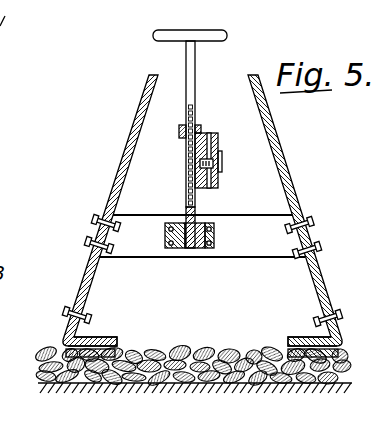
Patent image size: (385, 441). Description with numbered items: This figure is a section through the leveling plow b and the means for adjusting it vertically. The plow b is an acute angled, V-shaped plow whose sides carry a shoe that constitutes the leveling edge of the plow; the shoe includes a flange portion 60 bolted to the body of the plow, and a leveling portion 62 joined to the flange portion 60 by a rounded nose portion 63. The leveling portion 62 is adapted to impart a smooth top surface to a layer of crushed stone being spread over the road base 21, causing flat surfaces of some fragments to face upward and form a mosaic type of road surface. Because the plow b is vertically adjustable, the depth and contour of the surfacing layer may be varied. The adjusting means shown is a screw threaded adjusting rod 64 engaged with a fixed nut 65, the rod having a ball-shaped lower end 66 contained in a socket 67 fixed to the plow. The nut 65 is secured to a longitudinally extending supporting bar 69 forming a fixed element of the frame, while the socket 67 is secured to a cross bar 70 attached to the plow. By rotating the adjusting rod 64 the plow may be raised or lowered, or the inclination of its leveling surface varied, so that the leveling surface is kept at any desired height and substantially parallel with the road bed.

The road base 21 is at (222, 380).
The flange portion 60 is at (63, 335).
The leveling portion 62 is at (101, 357).
The rounded nose portion 63 is at (62, 351).
The adjusting rod 64 is at (196, 104).
The fixed nut 65 is at (180, 133).
The ball-shaped lower end 66 is at (214, 236).
The socket 67 is at (178, 250).
The supporting bar 69 is at (219, 184).
The cross bar 70 is at (276, 258).
The leveling plow b is at (92, 264).